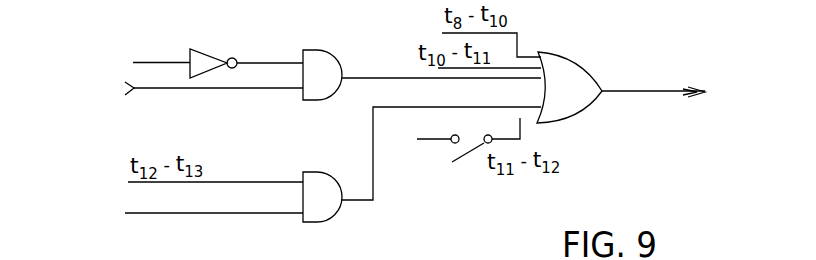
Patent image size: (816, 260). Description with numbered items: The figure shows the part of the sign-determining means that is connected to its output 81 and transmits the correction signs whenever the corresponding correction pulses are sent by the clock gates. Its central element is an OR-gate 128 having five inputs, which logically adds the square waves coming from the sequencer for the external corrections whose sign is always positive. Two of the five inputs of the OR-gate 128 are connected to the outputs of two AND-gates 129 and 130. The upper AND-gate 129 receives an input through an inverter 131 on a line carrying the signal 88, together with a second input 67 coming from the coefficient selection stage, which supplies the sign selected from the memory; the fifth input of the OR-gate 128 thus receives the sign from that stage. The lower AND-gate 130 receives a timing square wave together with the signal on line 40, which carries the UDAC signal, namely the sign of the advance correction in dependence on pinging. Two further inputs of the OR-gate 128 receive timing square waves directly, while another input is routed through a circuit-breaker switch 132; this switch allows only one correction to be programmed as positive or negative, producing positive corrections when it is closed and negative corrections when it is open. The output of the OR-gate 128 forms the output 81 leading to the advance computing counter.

The input signal line 88 is at (150, 62).
The inverter 131 is at (212, 50).
The coefficient selection stage 67 is at (197, 87).
The AND-gate 129 is at (322, 63).
The OR-gate 128 is at (562, 75).
The output 81 is at (645, 92).
The line 40 is at (232, 213).
The AND-gate 130 is at (323, 208).
The circuit-breaker switch 132 is at (463, 145).